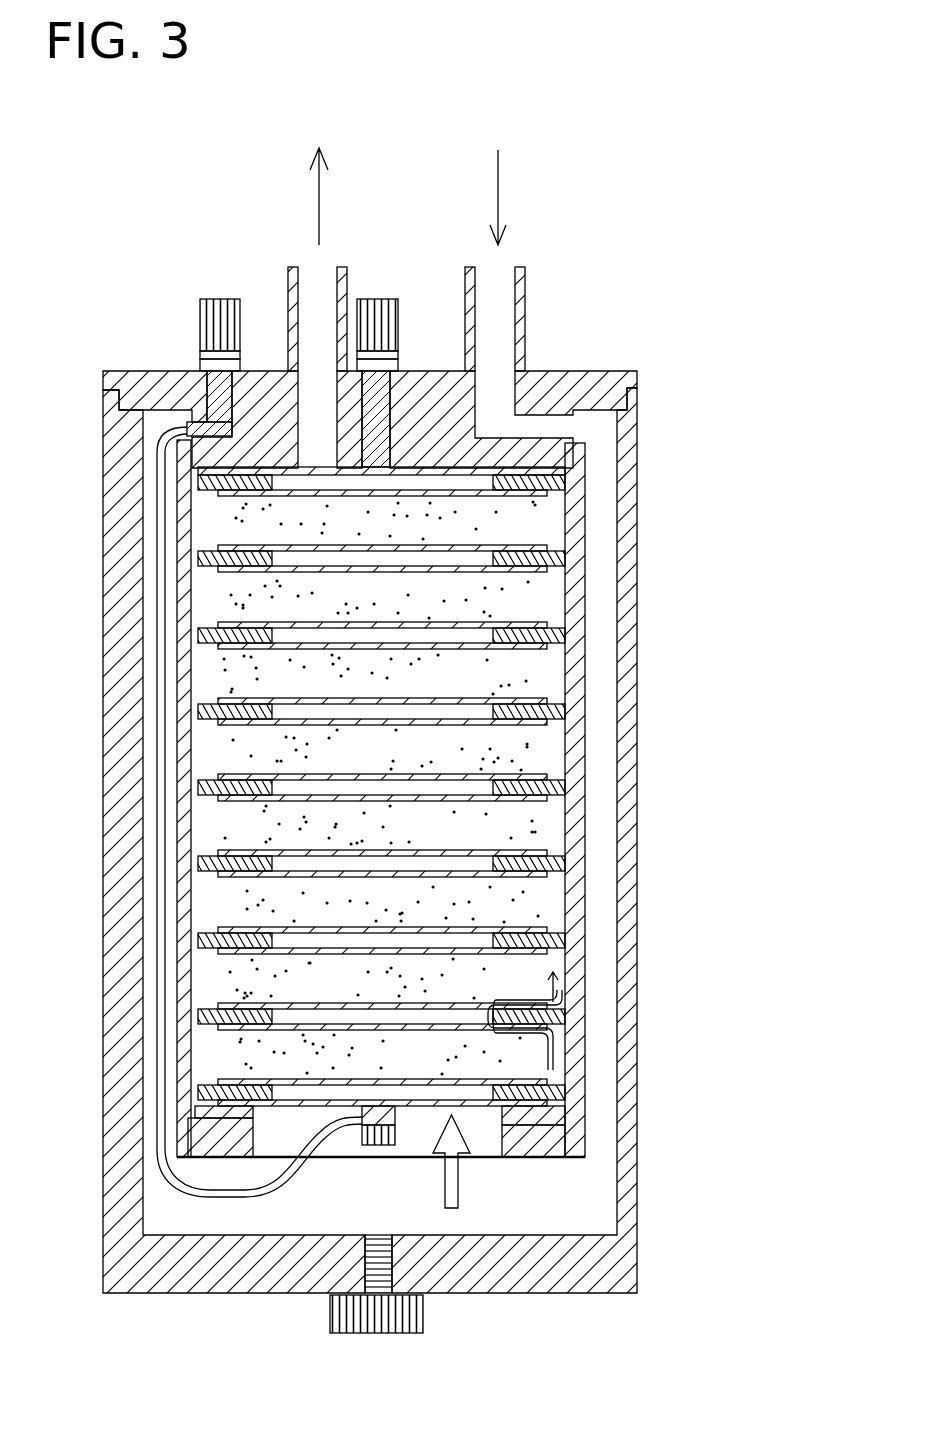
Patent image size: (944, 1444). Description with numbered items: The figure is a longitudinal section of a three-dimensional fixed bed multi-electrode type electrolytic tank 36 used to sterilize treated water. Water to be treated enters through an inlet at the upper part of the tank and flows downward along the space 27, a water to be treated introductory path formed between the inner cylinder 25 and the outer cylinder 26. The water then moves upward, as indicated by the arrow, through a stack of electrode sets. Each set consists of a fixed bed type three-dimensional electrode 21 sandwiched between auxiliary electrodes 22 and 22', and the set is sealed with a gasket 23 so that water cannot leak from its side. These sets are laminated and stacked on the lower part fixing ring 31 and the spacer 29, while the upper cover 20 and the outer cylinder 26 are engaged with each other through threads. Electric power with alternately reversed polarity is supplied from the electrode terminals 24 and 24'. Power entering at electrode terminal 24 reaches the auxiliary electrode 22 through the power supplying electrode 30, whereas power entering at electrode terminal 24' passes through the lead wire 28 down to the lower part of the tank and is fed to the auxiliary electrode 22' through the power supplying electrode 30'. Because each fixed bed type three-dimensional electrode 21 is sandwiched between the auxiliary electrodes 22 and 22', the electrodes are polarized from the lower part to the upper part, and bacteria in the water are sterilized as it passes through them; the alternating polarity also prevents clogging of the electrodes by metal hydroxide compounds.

The upper cover 20 is at (598, 385).
The fixed bed type 3-D electrode 21 is at (530, 522).
The auxiliary electrode 22 is at (460, 798).
The auxiliary electrode 22' is at (461, 815).
The gasket 23 is at (562, 935).
The electrode terminal 24 is at (382, 343).
The electrode terminal 24' is at (221, 327).
The inner cylinder 25 is at (575, 476).
The outer cylinder 26 is at (630, 1118).
The space (water to be treated introductory path) 27 is at (600, 1187).
The lead wire 28 is at (207, 1197).
The spacer 29 is at (197, 1110).
The power supplying electrode 30 is at (454, 419).
The power supplying electrode 30' is at (395, 1160).
The lower part fixing ring 31 is at (200, 1140).
The 3-D fixed bed multi-electrode type electrolytic tank 36 is at (646, 348).